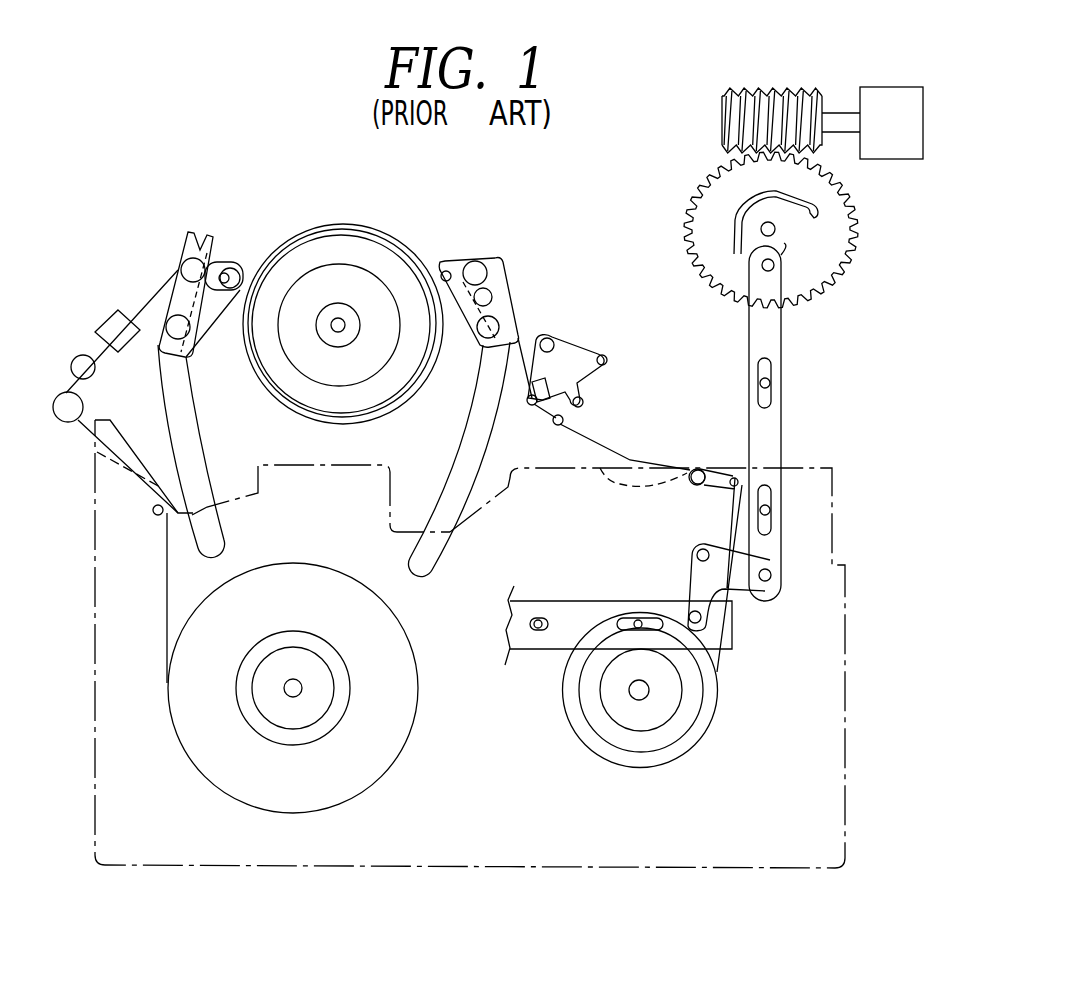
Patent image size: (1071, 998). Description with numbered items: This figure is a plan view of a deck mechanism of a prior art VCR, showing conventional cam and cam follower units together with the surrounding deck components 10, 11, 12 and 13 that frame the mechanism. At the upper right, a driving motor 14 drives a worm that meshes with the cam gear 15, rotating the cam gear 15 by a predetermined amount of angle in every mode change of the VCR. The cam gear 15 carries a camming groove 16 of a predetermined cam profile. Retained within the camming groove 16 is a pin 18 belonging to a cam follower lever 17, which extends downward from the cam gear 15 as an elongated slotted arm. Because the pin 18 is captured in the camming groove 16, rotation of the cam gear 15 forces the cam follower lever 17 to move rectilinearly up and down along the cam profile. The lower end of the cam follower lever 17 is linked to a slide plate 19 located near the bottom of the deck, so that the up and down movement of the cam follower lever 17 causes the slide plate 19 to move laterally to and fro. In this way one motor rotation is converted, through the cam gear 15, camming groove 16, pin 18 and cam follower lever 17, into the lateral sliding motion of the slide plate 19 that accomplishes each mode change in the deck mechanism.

The frame 10 is at (165, 577).
The housing 11 is at (95, 778).
The drum 12 is at (377, 228).
The latch plate 13 is at (548, 385).
The driving motor 14 is at (900, 87).
The cam gear 15 is at (852, 246).
The camming groove 16 is at (818, 208).
The cam follower lever 17 is at (782, 450).
The pin 18 is at (771, 268).
The slide plate 19 is at (567, 602).